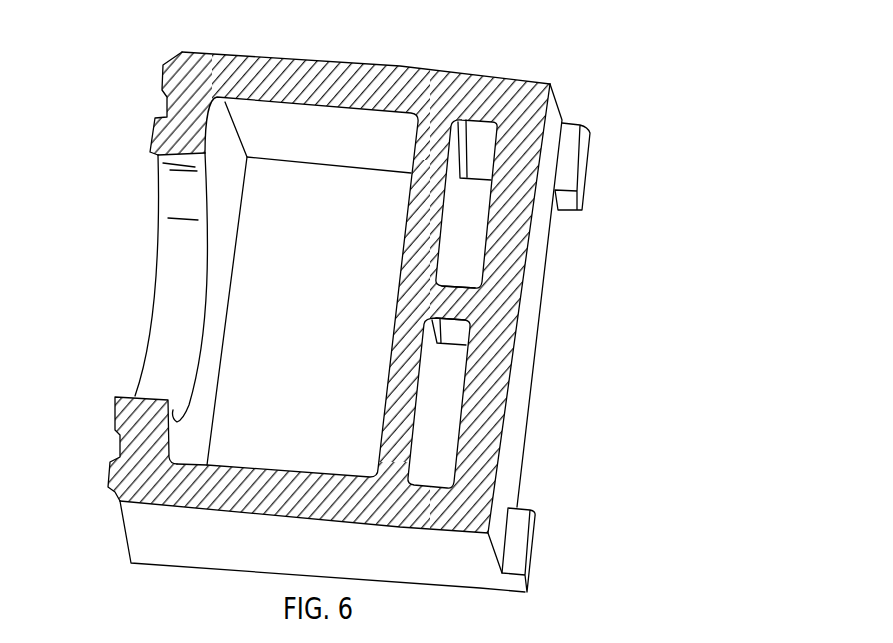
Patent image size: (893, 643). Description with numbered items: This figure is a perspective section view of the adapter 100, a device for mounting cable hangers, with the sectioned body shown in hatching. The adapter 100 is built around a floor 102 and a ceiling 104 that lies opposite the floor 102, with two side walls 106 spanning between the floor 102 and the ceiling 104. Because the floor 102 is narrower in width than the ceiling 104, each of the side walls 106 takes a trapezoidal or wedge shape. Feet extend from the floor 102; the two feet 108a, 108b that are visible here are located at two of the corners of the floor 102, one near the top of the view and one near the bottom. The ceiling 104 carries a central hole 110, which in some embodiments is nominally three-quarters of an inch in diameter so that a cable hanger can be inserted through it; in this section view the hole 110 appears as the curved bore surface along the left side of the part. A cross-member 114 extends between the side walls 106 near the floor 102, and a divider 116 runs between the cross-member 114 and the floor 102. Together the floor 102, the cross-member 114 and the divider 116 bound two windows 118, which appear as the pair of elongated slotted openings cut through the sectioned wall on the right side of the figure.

The adapter 100 is at (394, 300).
The floor 102 is at (508, 256).
The ceiling 104 is at (130, 426).
The side walls 106 is at (383, 87).
The foot 108a is at (517, 543).
The foot 108b is at (567, 164).
The central hole 110 is at (167, 303).
The cross-member 114 is at (423, 257).
The divider 116 is at (457, 307).
The windows 118 is at (465, 221).